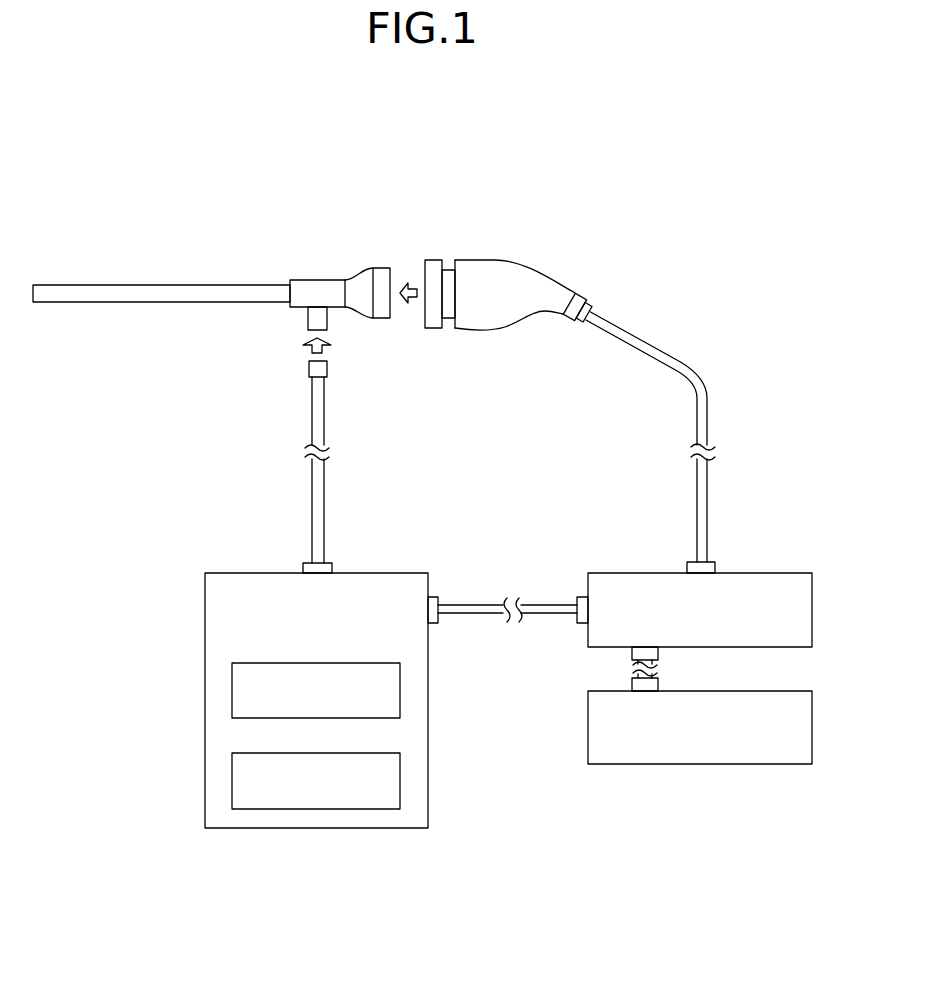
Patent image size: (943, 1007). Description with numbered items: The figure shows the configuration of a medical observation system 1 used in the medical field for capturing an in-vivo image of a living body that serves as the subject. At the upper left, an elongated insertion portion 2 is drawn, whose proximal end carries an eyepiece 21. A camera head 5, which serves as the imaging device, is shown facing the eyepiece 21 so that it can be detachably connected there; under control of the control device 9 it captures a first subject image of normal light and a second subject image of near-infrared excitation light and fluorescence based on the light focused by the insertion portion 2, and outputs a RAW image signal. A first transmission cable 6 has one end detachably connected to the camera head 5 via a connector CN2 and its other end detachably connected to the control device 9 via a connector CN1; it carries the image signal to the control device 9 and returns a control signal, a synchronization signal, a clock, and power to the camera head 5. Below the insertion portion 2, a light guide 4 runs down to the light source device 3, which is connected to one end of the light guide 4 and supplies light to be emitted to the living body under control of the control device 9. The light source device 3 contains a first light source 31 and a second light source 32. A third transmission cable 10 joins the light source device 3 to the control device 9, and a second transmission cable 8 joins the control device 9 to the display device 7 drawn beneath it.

The medical observation system 1 is at (659, 202).
The insertion portion 2 is at (240, 293).
The eyepiece 21 is at (382, 282).
The camera head 5 is at (475, 279).
The connector CN2 is at (583, 322).
The first transmission cable 6 is at (707, 413).
The connector CN1 is at (710, 557).
The control device 9 is at (769, 551).
The light guide 4 is at (312, 513).
The light source device 3 is at (374, 573).
The third transmission cable 10 is at (548, 603).
The first light source 31 is at (345, 663).
The second light source 32 is at (345, 753).
The second transmission cable 8 is at (632, 675).
The display device 7 is at (766, 691).